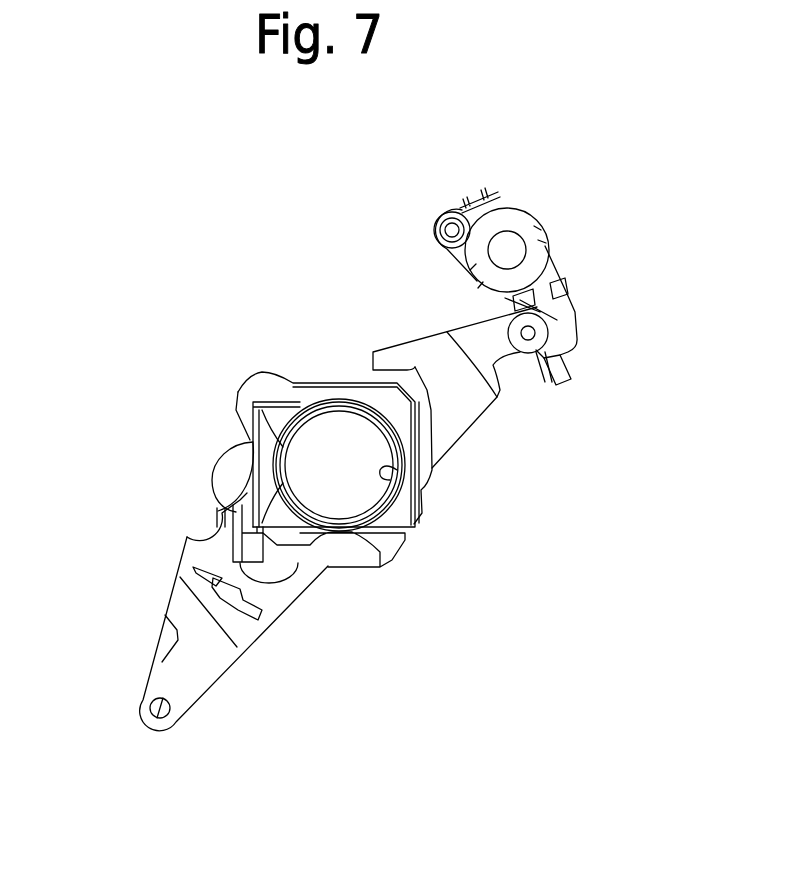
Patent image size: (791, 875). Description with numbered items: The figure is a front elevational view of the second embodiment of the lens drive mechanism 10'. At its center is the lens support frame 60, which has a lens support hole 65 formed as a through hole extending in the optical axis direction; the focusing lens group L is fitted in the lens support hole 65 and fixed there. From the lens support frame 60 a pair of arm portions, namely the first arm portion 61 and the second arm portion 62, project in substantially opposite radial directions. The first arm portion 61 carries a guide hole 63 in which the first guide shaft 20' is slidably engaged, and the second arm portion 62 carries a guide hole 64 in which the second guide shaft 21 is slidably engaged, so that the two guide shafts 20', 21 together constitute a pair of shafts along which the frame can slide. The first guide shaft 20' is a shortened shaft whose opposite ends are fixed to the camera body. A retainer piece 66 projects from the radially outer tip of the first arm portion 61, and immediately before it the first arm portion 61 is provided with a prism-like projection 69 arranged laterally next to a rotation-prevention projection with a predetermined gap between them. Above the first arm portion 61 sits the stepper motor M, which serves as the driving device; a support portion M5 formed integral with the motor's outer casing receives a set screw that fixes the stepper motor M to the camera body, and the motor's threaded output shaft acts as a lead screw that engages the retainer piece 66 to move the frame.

The lens drive mechanism 10' is at (329, 460).
The lens support frame 60 is at (253, 443).
The first arm portion 61 is at (468, 335).
The second arm portion 62 is at (173, 630).
The guide hole 63 is at (527, 352).
The guide hole 64 is at (158, 717).
The lens support hole 65 is at (380, 467).
The retainer piece 66 is at (547, 273).
The prism-like projection 69 is at (563, 313).
The first guide shaft 20' is at (533, 400).
The second guide shaft 21 is at (155, 708).
The focusing lens group L is at (332, 432).
The stepper motor M is at (522, 227).
The support portion M5 is at (448, 213).